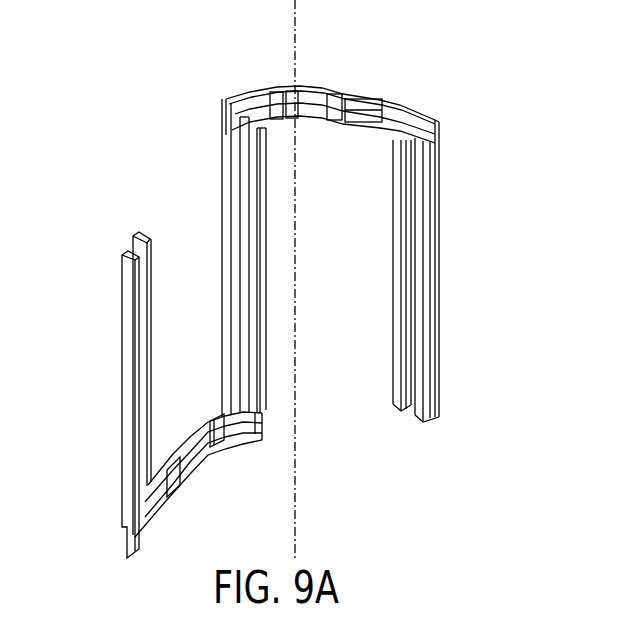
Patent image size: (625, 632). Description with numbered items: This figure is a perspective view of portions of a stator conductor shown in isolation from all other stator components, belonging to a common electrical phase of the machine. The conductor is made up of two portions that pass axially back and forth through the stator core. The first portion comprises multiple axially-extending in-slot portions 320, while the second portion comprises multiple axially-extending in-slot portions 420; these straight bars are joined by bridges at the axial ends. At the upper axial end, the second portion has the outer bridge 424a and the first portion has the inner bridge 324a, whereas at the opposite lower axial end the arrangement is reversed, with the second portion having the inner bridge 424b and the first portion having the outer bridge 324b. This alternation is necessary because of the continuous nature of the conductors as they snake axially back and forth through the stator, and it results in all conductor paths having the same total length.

The in-slot portions 320 is at (244, 328).
The in-slot portions 420 is at (317, 311).
The outer bridge 424a is at (379, 81).
The inner bridge 324a is at (321, 140).
The inner bridge 424b is at (190, 409).
The outer bridge 324b is at (187, 492).